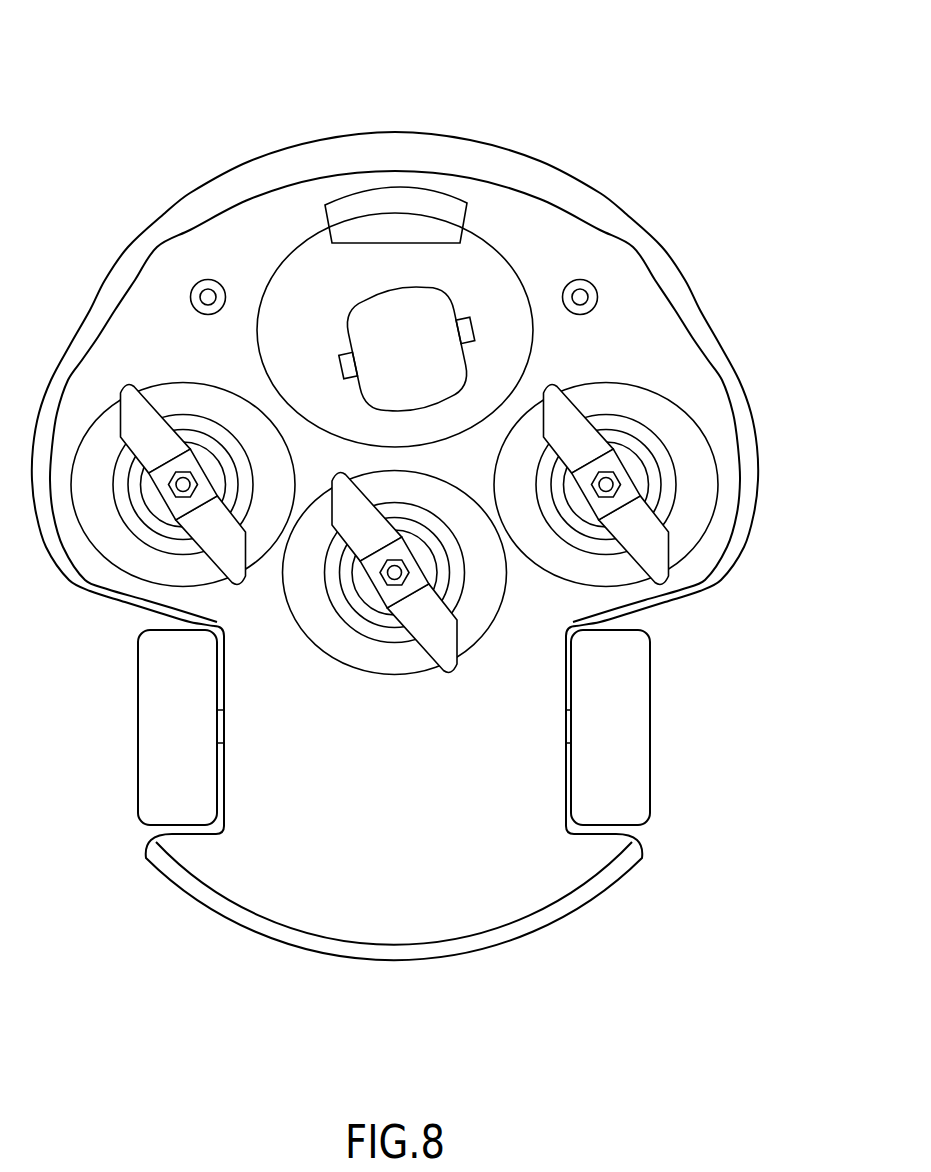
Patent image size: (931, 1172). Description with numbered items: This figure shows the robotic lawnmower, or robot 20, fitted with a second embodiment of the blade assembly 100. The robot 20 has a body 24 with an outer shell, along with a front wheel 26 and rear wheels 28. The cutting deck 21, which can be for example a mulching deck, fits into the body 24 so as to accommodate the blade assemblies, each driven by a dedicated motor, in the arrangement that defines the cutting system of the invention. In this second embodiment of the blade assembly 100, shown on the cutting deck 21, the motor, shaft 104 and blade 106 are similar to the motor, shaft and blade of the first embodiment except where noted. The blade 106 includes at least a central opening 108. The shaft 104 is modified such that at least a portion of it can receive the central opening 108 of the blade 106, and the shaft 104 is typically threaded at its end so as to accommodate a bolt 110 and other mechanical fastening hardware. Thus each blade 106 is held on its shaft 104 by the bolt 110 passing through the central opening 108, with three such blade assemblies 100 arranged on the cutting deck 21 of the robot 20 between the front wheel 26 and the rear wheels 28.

The robotic lawnmower 20 is at (378, 112).
The cutting deck 21 is at (252, 255).
The body 24 is at (692, 330).
The front wheel 26 is at (428, 313).
The rear wheel 28 is at (152, 750).
The blade assembly 100 is at (655, 443).
The shaft 104 is at (394, 640).
The blade 106 is at (460, 658).
The central opening 108 is at (718, 480).
The bolt 110 is at (407, 504).